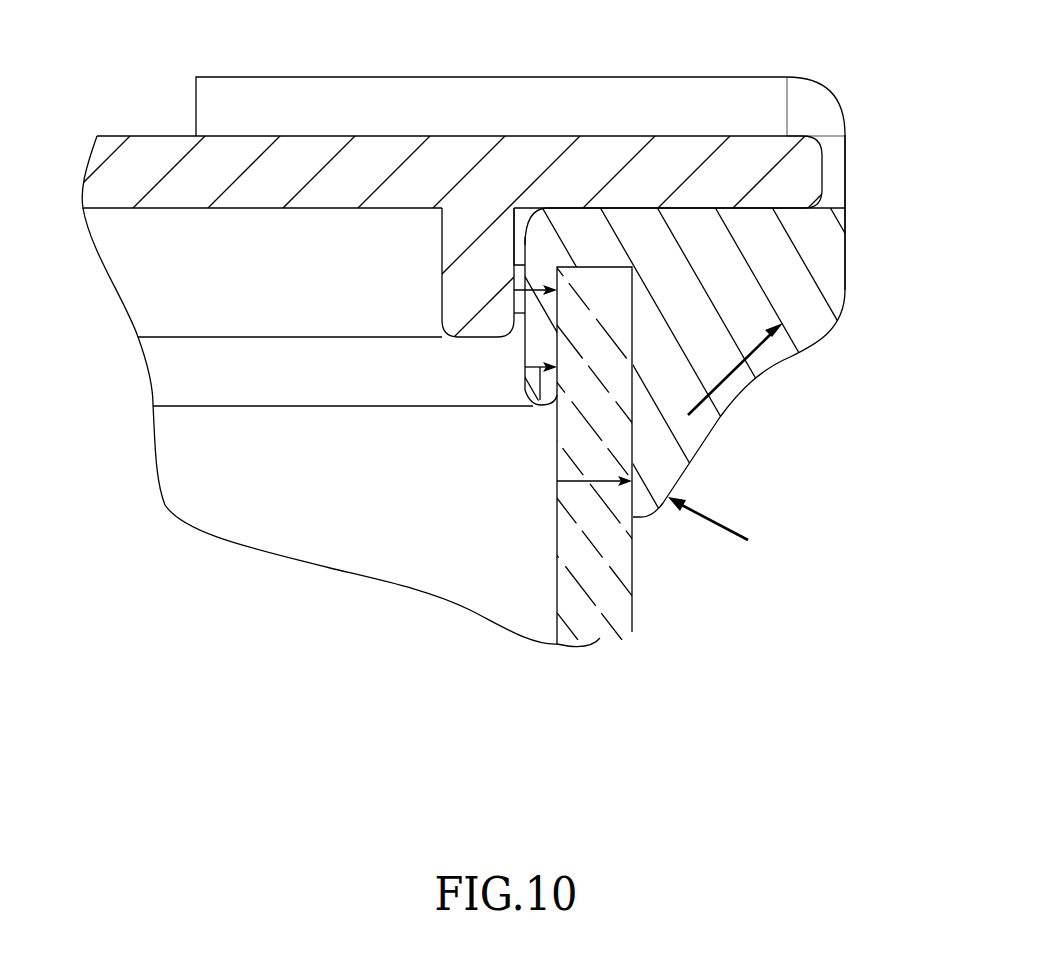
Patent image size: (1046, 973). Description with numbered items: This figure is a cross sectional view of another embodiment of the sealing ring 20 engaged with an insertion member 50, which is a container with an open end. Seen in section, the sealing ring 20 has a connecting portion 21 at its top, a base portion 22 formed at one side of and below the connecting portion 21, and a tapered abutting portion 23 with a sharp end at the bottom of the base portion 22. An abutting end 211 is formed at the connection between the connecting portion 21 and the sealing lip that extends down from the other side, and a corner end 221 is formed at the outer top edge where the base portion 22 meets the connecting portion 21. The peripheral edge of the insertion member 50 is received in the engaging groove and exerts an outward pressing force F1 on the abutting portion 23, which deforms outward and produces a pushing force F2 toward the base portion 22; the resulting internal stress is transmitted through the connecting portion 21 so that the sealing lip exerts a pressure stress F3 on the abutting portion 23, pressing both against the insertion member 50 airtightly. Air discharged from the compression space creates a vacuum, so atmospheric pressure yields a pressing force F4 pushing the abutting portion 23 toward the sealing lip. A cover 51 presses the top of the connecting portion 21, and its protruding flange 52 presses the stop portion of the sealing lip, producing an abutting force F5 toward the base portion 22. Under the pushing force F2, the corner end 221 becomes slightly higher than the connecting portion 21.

The sealing ring 20 is at (293, 411).
The connecting portion 21 is at (603, 240).
The abutting end 211 is at (527, 232).
The base portion 22 is at (830, 263).
The corner end 221 is at (826, 205).
The abutting portion 23 is at (688, 443).
The insertion member 50 is at (610, 630).
The cover 51 is at (153, 157).
The protruding flange 52 is at (457, 275).
The outward pressing force F1 is at (557, 540).
The pushing force F2 is at (760, 348).
The pressure stress F3 is at (538, 398).
The pressing force F4 is at (690, 535).
The abutting force F5 is at (533, 290).